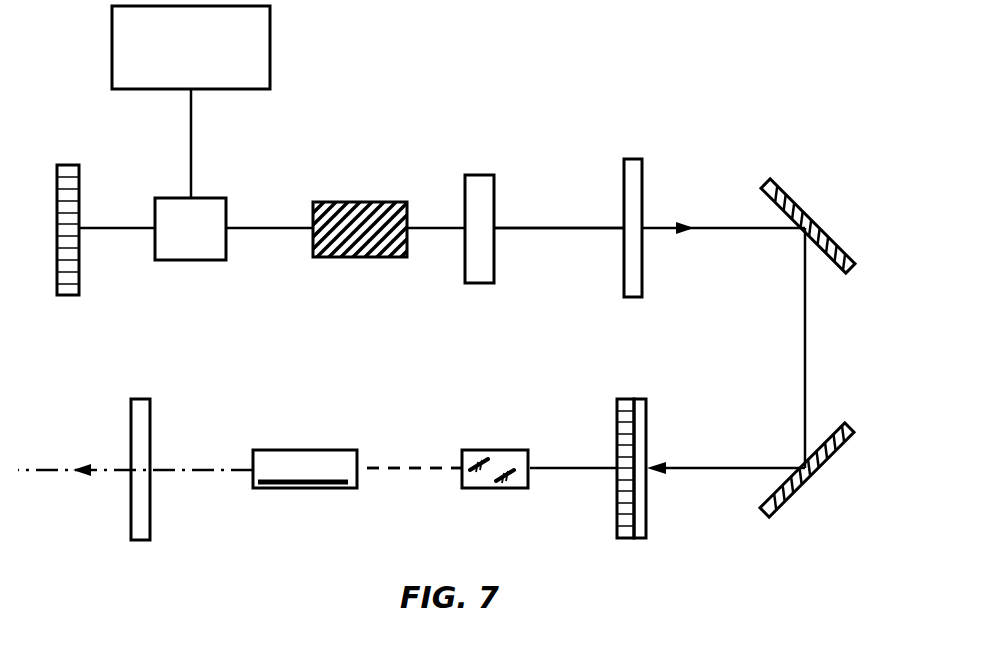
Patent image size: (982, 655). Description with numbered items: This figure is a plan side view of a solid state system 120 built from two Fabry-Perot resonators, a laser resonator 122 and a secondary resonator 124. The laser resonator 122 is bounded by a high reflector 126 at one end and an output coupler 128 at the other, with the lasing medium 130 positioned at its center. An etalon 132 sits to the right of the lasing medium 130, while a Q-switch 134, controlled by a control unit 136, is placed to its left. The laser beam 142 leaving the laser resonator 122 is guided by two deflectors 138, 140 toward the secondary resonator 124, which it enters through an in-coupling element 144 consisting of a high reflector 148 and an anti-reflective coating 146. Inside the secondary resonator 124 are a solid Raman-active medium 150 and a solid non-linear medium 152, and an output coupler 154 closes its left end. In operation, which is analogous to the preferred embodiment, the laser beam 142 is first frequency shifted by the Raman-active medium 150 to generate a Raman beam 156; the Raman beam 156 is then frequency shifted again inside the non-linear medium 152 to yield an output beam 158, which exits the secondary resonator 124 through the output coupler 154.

The solid state system 120 is at (662, 39).
The laser resonator 122 is at (548, 144).
The secondary resonator 124 is at (222, 531).
The high reflector 126 is at (63, 296).
The output coupler 128 is at (634, 298).
The lasing medium 130 is at (355, 258).
The etalon 132 is at (476, 175).
The Q-switch 134 is at (216, 198).
The control unit 136 is at (270, 40).
The deflector 138 is at (796, 200).
The deflector 140 is at (795, 494).
The laser beam 142 is at (556, 230).
The in-coupling element 144 is at (652, 500).
The anti-reflective coating 146 is at (646, 404).
The high reflector 148 is at (617, 532).
The solid Raman-active medium 150 is at (497, 450).
The solid non-linear medium 152 is at (325, 490).
The output coupler 154 is at (143, 398).
The Raman beam 156 is at (410, 467).
The output beam 158 is at (207, 467).